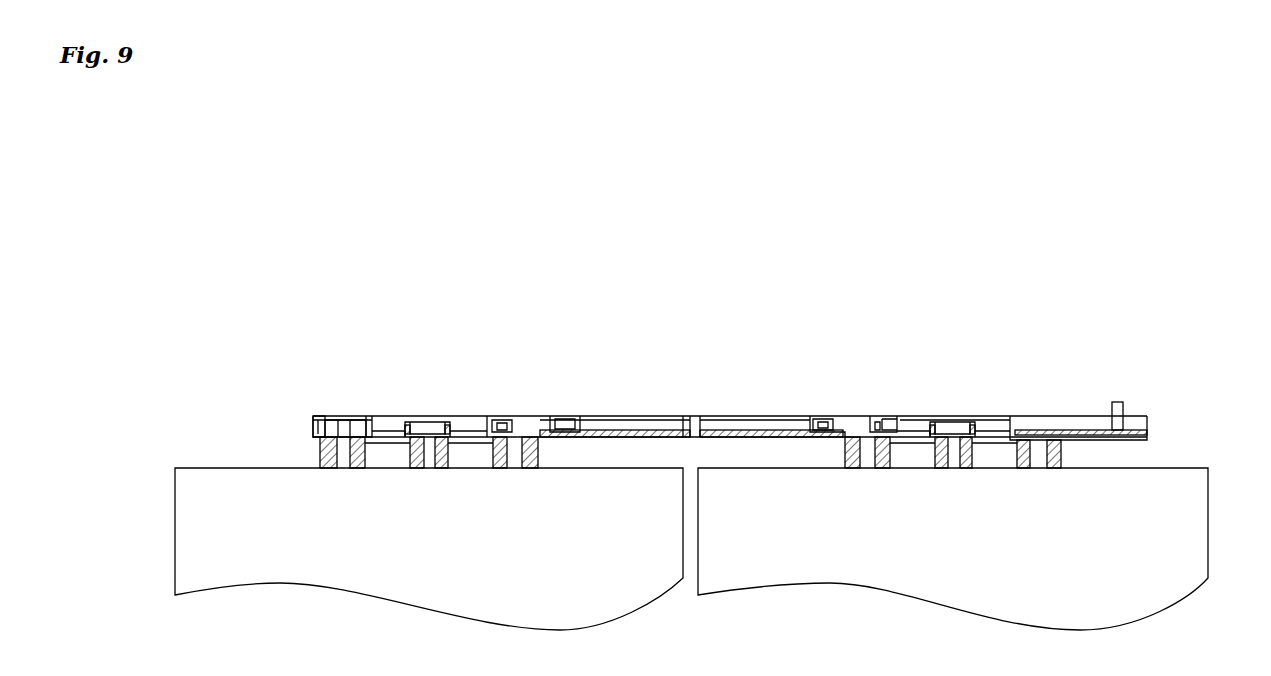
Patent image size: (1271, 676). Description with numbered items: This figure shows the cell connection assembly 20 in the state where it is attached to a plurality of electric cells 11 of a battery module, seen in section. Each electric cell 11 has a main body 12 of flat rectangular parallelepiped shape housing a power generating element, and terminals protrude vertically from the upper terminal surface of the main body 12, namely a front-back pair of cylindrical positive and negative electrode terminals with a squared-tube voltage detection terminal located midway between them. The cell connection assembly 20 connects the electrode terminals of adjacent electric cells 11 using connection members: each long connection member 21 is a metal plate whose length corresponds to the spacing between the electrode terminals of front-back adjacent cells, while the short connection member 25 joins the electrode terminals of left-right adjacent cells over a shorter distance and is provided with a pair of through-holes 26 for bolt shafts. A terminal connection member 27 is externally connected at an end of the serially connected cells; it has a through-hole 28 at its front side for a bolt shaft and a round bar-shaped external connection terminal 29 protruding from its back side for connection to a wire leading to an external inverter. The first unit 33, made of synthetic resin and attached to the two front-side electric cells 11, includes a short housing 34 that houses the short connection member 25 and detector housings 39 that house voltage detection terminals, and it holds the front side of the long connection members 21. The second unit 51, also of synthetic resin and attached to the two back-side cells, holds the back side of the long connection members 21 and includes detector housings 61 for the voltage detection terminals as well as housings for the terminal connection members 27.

The electric cell 11 is at (166, 487).
The main body 12 is at (215, 540).
The cell connection assembly 20 is at (764, 293).
The long connection member 21 is at (650, 430).
The short connection member 25 is at (326, 416).
The through-holes 26 is at (349, 416).
The terminal connection member 27 is at (1082, 430).
The through-hole 28 is at (1040, 430).
The external connection terminal 29 is at (1123, 406).
The first unit 33 is at (546, 347).
The short housing 34 is at (362, 416).
The detector housings 39 is at (432, 424).
The second unit 51 is at (917, 327).
The detector housings 61 is at (957, 424).